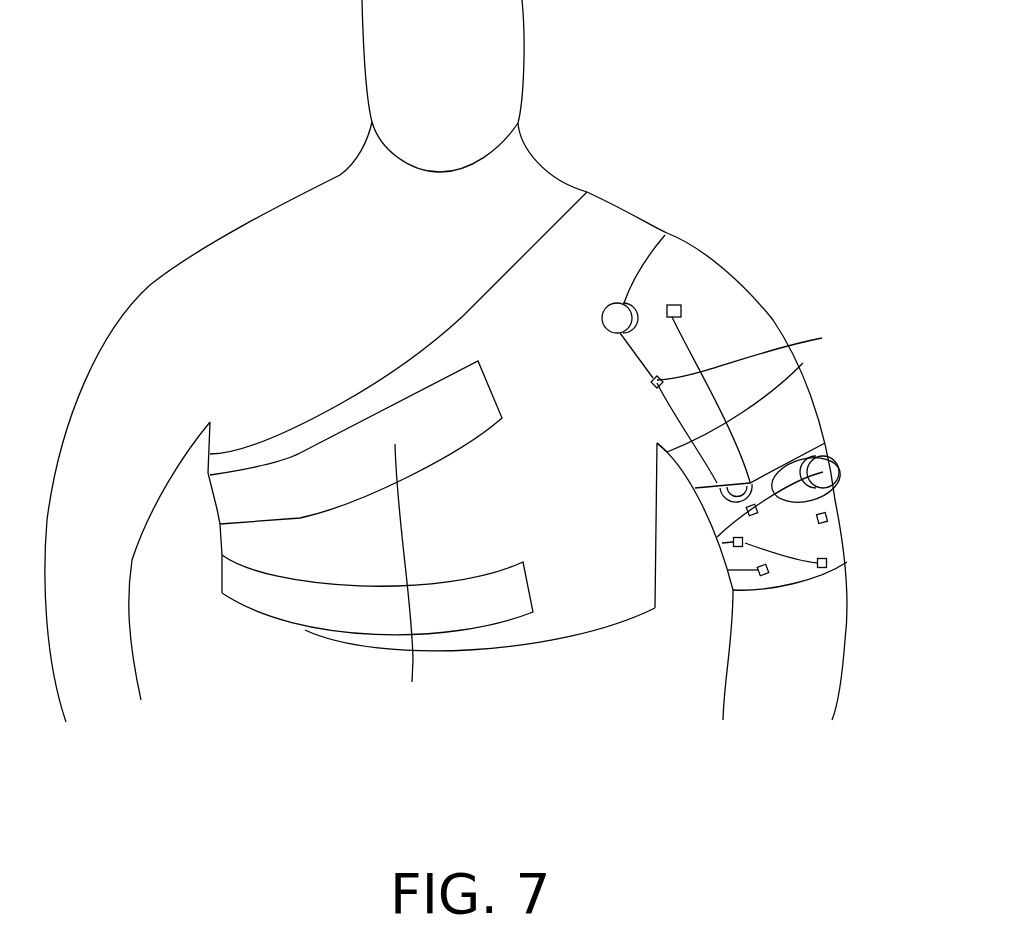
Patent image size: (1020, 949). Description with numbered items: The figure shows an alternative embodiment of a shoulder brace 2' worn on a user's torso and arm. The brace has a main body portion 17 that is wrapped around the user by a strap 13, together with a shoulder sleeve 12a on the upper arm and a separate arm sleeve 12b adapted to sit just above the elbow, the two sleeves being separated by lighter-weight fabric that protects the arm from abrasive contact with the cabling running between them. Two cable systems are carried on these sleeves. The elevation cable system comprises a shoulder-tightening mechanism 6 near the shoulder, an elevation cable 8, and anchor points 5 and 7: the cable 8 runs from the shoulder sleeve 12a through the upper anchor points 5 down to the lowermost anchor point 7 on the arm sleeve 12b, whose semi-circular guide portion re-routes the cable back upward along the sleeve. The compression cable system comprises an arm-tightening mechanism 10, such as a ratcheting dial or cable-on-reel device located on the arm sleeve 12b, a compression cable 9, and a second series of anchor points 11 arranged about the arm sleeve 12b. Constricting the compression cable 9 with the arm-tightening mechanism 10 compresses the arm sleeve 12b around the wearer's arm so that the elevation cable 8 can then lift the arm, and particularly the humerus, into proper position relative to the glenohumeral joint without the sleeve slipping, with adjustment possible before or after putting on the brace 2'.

The shoulder brace 2' is at (841, 74).
The anchor points 5 is at (683, 310).
The shoulder-tightening mechanism 6 is at (623, 315).
The lowermost anchor point 7 is at (720, 500).
The elevation cable 8 is at (667, 234).
The compression cable 9 is at (824, 570).
The arm-tightening mechanism 10 is at (823, 475).
The anchor points 11 is at (846, 482).
The shoulder sleeve 12a is at (740, 323).
The arm sleeve 12b is at (833, 505).
The strap 13 is at (467, 592).
The main body portion 17 is at (577, 600).